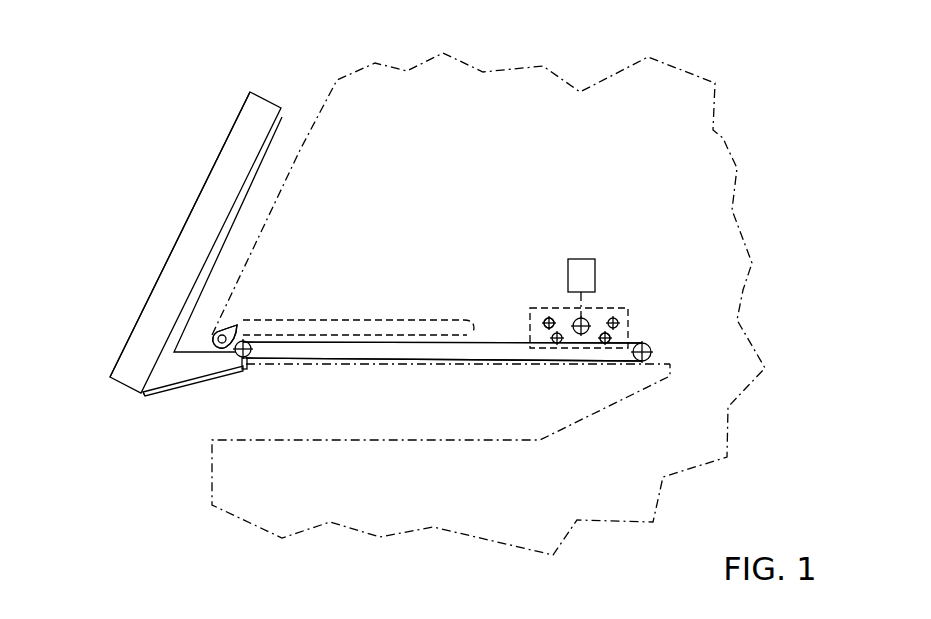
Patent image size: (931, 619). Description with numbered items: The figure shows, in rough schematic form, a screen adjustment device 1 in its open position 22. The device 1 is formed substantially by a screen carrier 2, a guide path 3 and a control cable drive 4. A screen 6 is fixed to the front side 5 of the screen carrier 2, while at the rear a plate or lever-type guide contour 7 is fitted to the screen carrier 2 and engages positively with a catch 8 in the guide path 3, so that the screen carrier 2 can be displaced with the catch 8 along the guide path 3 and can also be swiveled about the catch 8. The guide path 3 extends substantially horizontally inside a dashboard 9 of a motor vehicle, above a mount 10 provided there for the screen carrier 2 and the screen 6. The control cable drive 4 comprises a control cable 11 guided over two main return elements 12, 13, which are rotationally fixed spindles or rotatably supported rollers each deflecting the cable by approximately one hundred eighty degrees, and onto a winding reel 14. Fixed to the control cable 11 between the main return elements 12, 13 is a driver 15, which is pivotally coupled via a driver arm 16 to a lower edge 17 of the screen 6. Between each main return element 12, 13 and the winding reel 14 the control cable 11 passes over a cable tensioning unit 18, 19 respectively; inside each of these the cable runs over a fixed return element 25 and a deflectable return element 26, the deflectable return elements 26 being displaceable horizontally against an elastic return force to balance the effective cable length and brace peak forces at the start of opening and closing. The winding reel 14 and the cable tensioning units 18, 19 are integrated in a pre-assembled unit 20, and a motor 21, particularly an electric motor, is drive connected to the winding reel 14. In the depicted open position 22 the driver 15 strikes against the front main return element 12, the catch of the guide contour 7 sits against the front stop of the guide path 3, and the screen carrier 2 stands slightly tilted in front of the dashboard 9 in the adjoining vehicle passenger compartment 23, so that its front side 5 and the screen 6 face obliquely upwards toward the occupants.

The screen adjustment device 1 is at (453, 254).
The screen carrier 2 is at (282, 117).
The guide path 3 is at (386, 319).
The control cable drive 4 is at (668, 329).
The front side 5 is at (212, 225).
The screen 6 is at (140, 323).
The guide contour 7 is at (226, 332).
The catch 8 is at (229, 337).
The dashboard 9 is at (725, 138).
The mount 10 is at (427, 415).
The control cable 11 is at (490, 341).
The front main return element 12 is at (251, 353).
The main return element 13 is at (651, 351).
The winding reel 14 is at (590, 327).
The driver 15 is at (244, 370).
The driver arm 16 is at (183, 389).
The lower edge 17 is at (138, 395).
The cable tensioning unit 18 is at (545, 328).
The cable tensioning unit 19 is at (612, 337).
The pre-assembled unit 20 is at (558, 307).
The motor 21 is at (581, 259).
The open position 22 is at (157, 100).
The vehicle passenger compartment 23 is at (34, 198).
The fixed return element 25 is at (548, 317).
The deflectable return element 26 is at (560, 343).